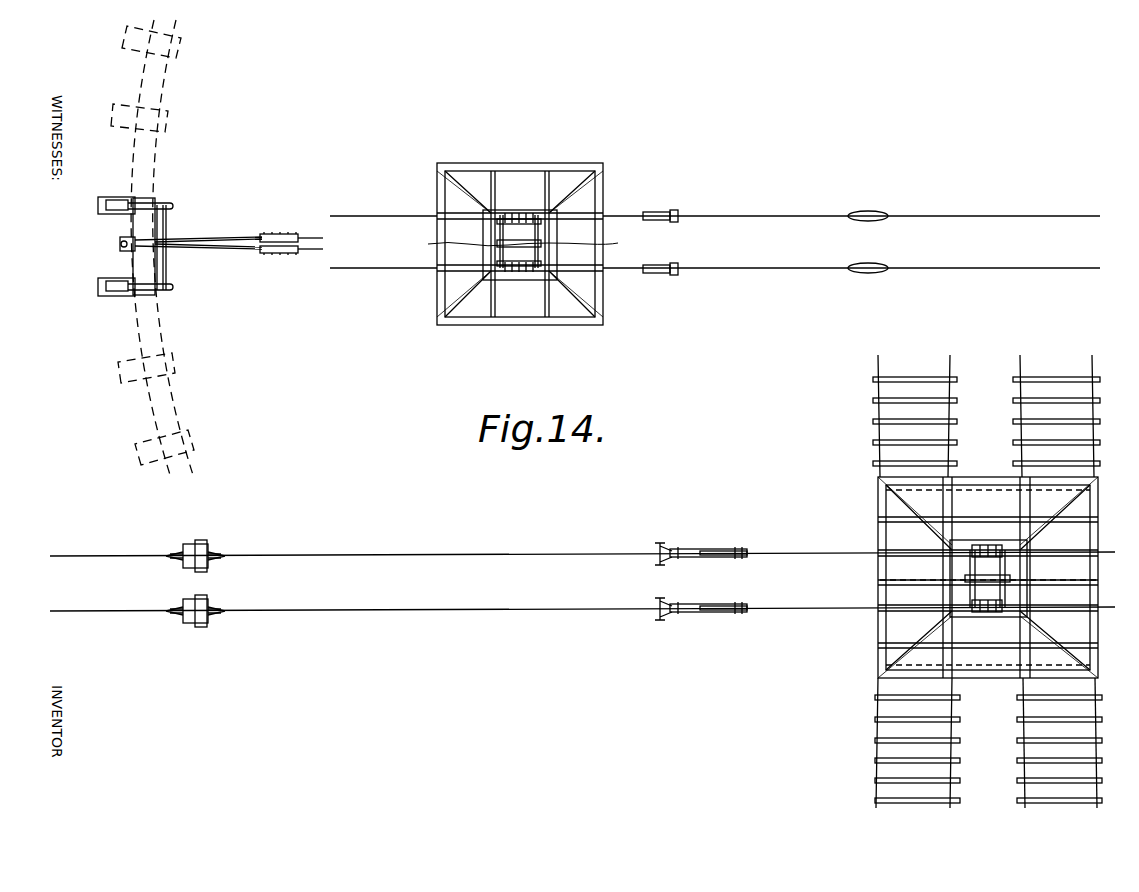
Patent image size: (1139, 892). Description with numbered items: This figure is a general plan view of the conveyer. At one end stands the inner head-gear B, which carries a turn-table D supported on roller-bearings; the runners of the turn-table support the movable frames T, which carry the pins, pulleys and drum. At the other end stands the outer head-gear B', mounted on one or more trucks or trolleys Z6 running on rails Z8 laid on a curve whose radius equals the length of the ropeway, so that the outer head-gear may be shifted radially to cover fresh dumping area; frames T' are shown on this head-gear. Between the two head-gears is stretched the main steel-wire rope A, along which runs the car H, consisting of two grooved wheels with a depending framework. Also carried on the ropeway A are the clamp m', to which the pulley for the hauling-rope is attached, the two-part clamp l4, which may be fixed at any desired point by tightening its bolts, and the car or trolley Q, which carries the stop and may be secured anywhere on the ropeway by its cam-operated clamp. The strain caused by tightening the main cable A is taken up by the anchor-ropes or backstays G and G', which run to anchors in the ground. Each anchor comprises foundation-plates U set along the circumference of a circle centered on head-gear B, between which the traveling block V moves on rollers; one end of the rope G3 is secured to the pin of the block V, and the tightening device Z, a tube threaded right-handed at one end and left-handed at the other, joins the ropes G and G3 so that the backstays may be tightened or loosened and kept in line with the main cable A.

The foundation-plate U is at (104, 200).
The traveling block V is at (120, 244).
The rope G3 is at (236, 254).
The tightening device Z is at (278, 234).
The anchor-rope G is at (371, 244).
The movable frame T is at (520, 243).
The head-gear B is at (511, 244).
The turn-table D is at (603, 243).
The clamp m' is at (660, 241).
The steel-wire rope A is at (760, 214).
The clamp l4 is at (870, 211).
The car H is at (191, 542).
The car or trolley Q is at (695, 551).
The rails Z8 is at (873, 400).
The truck frame T' is at (988, 580).
The truck or trolley Z6 is at (1072, 508).
The anchor-rope G' is at (988, 577).
The head-gear B' is at (989, 592).